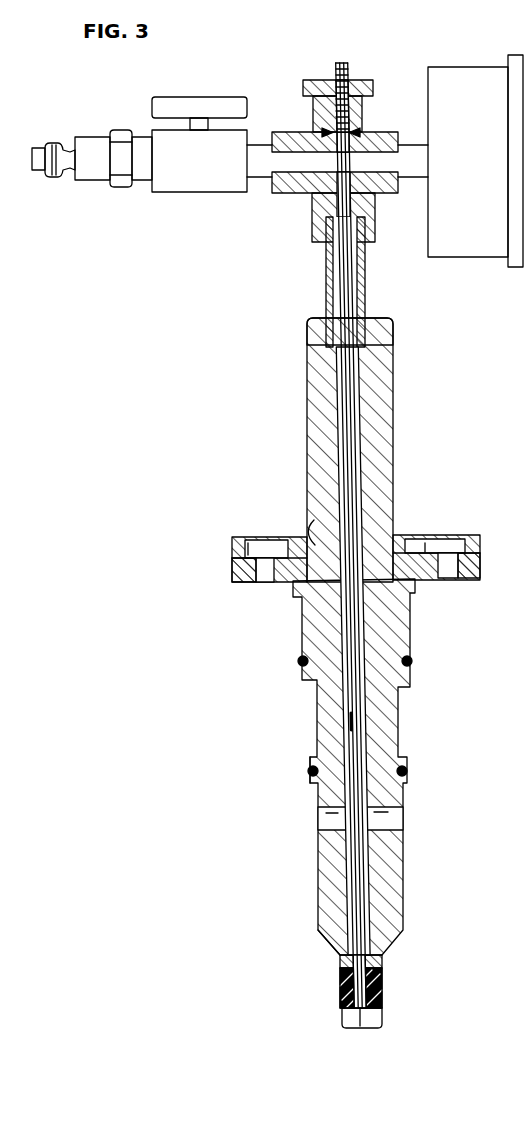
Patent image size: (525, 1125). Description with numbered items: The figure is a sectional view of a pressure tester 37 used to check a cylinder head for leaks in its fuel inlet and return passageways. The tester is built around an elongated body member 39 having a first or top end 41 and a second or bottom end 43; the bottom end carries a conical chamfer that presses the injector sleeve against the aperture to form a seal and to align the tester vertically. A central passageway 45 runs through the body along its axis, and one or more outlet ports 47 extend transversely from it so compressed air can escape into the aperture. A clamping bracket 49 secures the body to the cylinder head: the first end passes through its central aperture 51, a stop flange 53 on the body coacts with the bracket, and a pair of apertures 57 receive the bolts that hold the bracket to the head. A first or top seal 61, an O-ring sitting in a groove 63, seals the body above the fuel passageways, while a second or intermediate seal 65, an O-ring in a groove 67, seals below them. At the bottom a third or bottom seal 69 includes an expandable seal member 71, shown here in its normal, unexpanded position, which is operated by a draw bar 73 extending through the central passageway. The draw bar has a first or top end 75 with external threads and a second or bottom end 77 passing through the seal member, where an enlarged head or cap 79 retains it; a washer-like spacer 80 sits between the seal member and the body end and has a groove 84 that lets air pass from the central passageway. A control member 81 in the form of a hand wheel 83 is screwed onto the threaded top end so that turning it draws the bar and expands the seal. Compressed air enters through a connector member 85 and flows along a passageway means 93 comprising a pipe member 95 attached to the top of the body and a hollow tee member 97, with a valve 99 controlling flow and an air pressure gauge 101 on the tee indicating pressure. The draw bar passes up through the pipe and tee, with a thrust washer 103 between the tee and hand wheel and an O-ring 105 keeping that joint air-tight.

The pressure tester 37 is at (321, 80).
The body member 39 is at (307, 432).
The first or top end 41 is at (312, 324).
The second or bottom end 43 is at (325, 945).
The central passageway 45 is at (347, 722).
The outlet ports 47 is at (330, 823).
The clamping bracket 49 is at (241, 570).
The central aperture 51 is at (307, 526).
The stop flange 53 is at (292, 588).
The apertures 57 is at (264, 580).
The first or top seal 61 is at (413, 661).
The groove 63 is at (304, 670).
The second or intermediate seal 65 is at (405, 771).
The groove 67 is at (318, 782).
The third or bottom seal 69 is at (431, 1007).
The expandable seal member 71 is at (340, 995).
The draw bar 73 is at (346, 385).
The first or top end 75 is at (340, 66).
The second or bottom end 77 is at (357, 1030).
The enlarged head or cap 79 is at (371, 1027).
The washer-like spacer 80 is at (345, 973).
The control member 81 is at (403, 82).
The hand wheel 83 is at (305, 83).
The groove 84 is at (384, 964).
The connector member 85 is at (92, 172).
The passageway means 93 is at (295, 239).
The pipe member 95 is at (327, 281).
The hollow tee member 97 is at (297, 193).
The valve 99 is at (197, 192).
The air pressure gauge 101 is at (472, 73).
The thrust washer 103 is at (314, 125).
The O-ring 105 is at (358, 125).